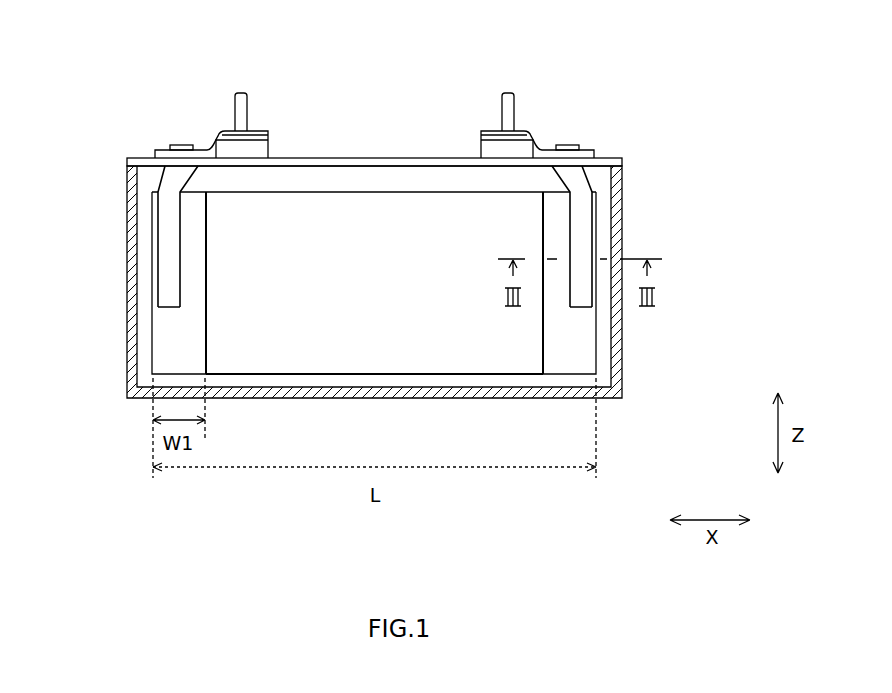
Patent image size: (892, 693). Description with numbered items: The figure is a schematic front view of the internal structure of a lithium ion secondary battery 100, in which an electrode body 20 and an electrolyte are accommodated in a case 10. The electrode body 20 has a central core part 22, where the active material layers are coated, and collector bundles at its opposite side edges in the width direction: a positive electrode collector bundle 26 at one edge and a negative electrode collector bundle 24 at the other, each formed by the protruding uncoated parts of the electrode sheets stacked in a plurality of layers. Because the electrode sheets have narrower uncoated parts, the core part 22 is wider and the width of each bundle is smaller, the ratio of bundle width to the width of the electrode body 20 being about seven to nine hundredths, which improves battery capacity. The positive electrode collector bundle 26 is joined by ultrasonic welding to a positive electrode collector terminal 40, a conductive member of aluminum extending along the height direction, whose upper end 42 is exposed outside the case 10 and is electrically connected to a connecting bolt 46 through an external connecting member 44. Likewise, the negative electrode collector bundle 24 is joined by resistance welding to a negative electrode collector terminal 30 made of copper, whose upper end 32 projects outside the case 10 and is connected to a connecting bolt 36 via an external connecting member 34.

The lithium ion secondary battery 100 is at (632, 27).
The case 10 is at (393, 149).
The electrode body 20 is at (362, 335).
The core part 22 is at (300, 336).
The negative electrode collector bundle 24 is at (588, 350).
The positive electrode collector bundle 26 is at (162, 357).
The negative electrode collector terminal 30 is at (578, 297).
The upper end of negative electrode collector terminal 32 is at (573, 142).
The external connecting member 34 is at (535, 133).
The connecting bolt 36 is at (515, 98).
The positive electrode collector terminal 40 is at (167, 288).
The upper end of positive electrode collector terminal 42 is at (182, 142).
The external connecting member 44 is at (212, 135).
The connecting bolt 46 is at (249, 100).